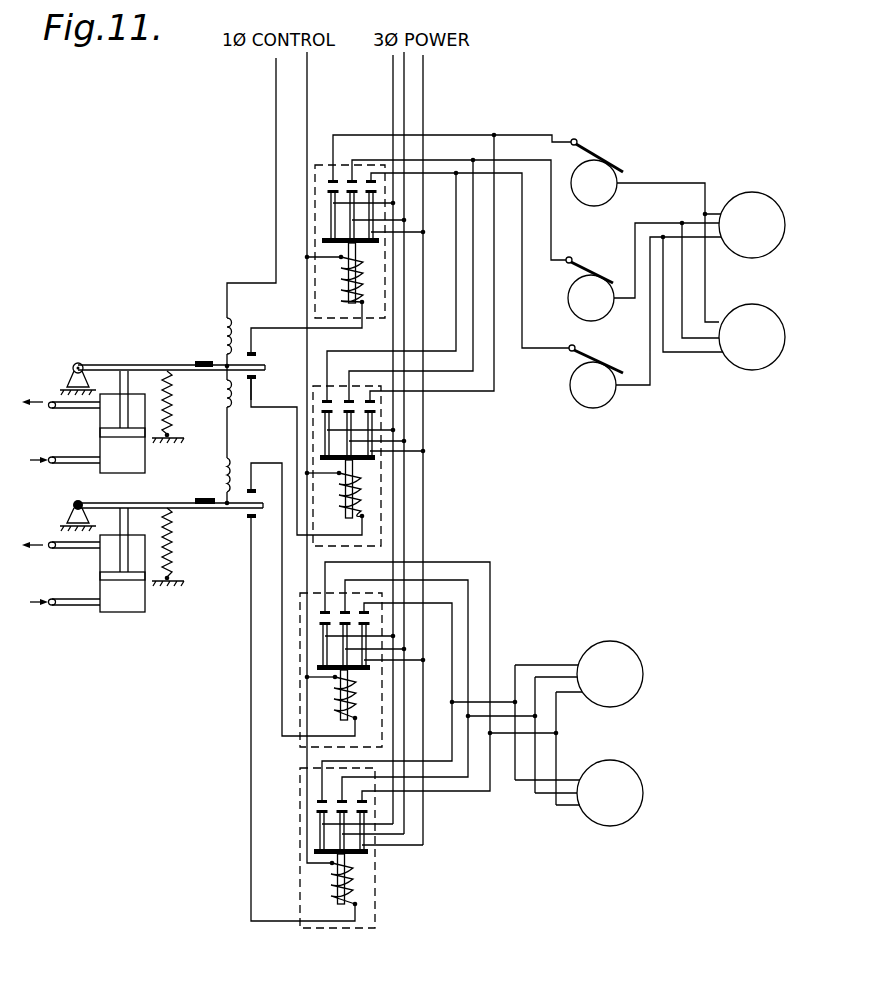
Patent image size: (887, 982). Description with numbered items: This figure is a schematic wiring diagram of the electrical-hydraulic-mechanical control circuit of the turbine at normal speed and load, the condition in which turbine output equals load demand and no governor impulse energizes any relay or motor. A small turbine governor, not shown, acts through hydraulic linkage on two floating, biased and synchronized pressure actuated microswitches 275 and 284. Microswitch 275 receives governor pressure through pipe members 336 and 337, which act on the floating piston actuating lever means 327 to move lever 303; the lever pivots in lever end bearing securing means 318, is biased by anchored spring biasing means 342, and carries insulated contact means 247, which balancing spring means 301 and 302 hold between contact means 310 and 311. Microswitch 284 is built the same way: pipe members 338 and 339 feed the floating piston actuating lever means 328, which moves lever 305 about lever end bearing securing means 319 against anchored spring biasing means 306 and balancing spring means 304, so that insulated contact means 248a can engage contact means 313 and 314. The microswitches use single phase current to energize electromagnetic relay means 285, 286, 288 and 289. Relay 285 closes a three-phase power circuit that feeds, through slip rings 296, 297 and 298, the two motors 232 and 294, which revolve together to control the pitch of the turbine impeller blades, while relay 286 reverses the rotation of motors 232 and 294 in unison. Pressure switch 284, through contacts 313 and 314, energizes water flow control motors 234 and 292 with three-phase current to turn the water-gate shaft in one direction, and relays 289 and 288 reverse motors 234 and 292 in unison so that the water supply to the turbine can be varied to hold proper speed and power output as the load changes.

The electromagnetic relay means 285 is at (306, 180).
The electromagnetic relay means 286 is at (306, 445).
The electromagnetic relay means 288 is at (293, 660).
The electromagnetic relay means 289 is at (293, 827).
The slip ring 296 is at (607, 167).
The slip ring 297 is at (598, 273).
The slip ring 298 is at (612, 355).
The motor 232 is at (768, 185).
The motor 294 is at (741, 371).
The water flow control motor 234 is at (633, 643).
The water flow control motor 292 is at (643, 771).
The balancing spring means 301 is at (222, 320).
The balancing spring means 302 is at (222, 392).
The balancing spring means 304 is at (222, 472).
The lever 303 is at (165, 361).
The lever 305 is at (157, 503).
The contact means 310 is at (257, 355).
The contact means 311 is at (271, 392).
The insulated contact means 247 is at (257, 376).
The contact means 313 is at (262, 485).
The contact means 314 is at (257, 519).
The lever end bearing securing means 318 is at (80, 363).
The lever end bearing securing means 319 is at (72, 507).
The floating piston actuating lever means 327 is at (100, 425).
The floating piston actuating lever means 328 is at (100, 568).
The pressure actuated microswitch 275 is at (149, 466).
The pressure actuated microswitch 284 is at (154, 604).
The pipe member 336 is at (77, 406).
The pipe member 337 is at (75, 466).
The pipe member 338 is at (77, 550).
The pipe member 339 is at (75, 608).
The anchored spring biasing means 342 is at (172, 415).
The anchored spring biasing means 306 is at (172, 556).
The insulated contact means 248a is at (242, 508).